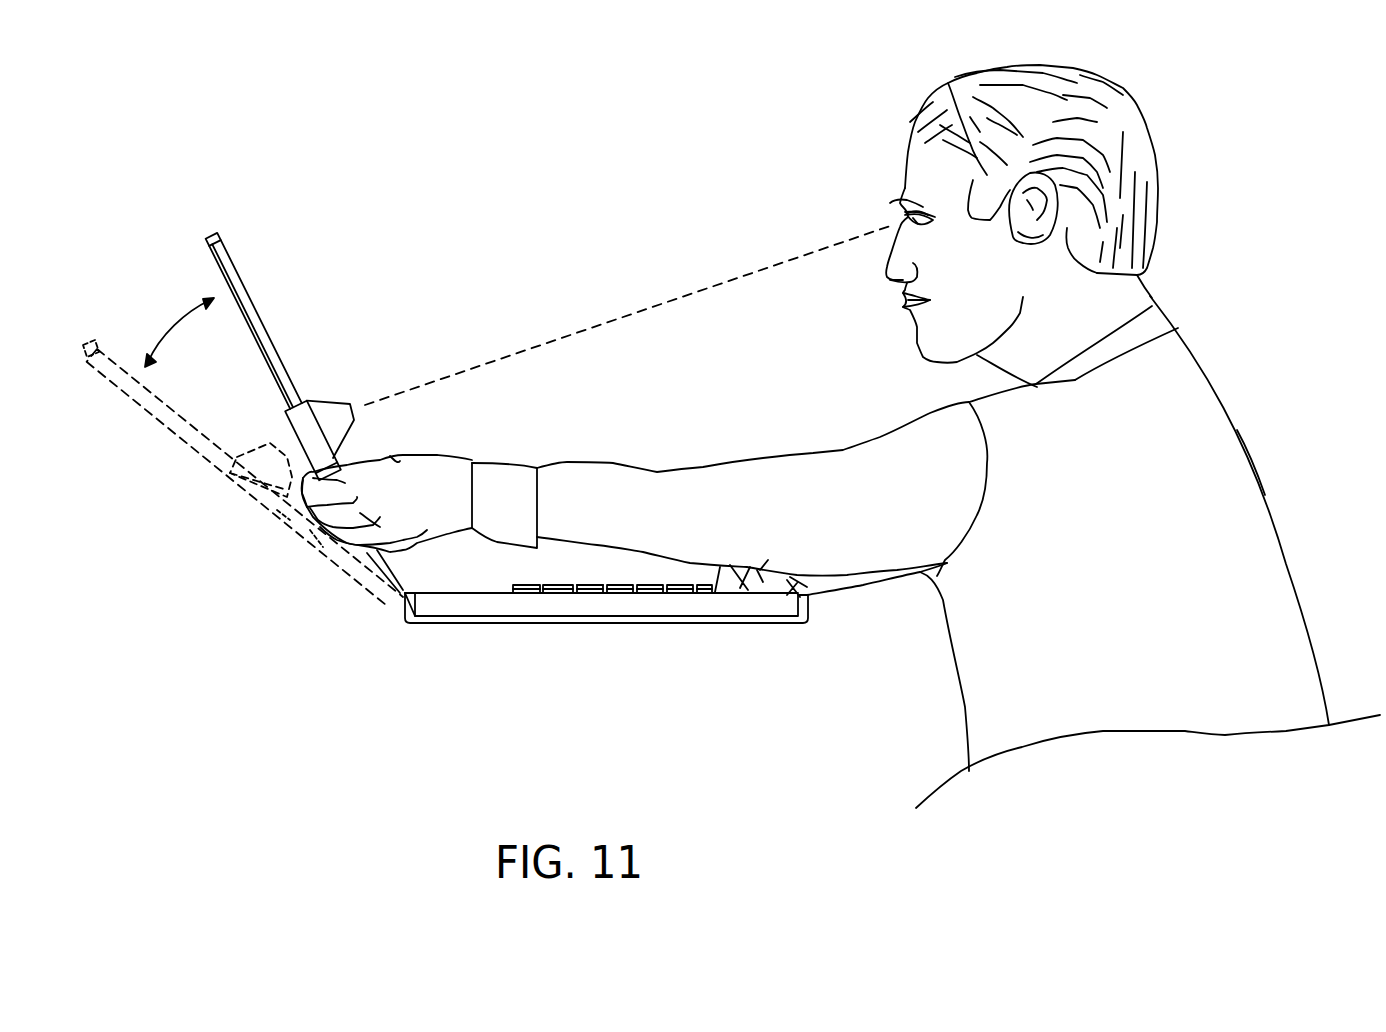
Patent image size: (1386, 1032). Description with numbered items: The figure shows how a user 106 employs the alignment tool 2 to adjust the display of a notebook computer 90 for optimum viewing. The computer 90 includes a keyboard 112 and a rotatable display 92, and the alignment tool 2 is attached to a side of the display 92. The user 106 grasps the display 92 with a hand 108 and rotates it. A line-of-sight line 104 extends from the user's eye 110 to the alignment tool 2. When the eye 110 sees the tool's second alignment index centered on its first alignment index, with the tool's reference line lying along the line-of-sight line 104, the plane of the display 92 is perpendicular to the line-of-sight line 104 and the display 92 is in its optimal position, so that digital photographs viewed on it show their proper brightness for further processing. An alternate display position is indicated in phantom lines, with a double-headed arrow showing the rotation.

The alignment tool 2 is at (352, 418).
The notebook computer 90 is at (762, 679).
The display 92 is at (258, 312).
The line-of-sight line 104 is at (668, 303).
The user 106 is at (1245, 479).
The hand 108 is at (417, 530).
The eye 110 is at (905, 218).
The keyboard 112 is at (587, 593).